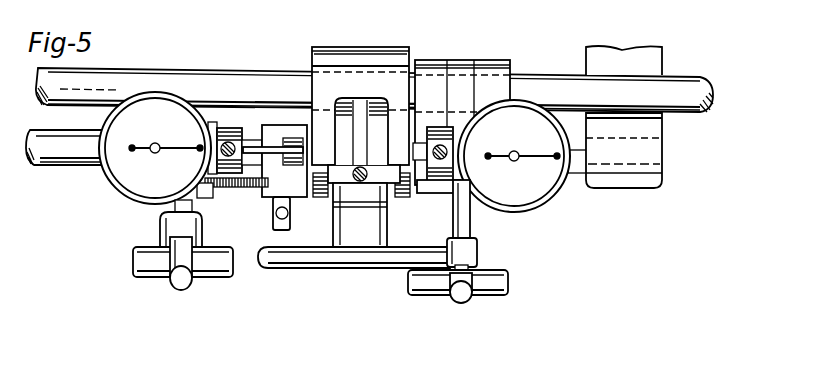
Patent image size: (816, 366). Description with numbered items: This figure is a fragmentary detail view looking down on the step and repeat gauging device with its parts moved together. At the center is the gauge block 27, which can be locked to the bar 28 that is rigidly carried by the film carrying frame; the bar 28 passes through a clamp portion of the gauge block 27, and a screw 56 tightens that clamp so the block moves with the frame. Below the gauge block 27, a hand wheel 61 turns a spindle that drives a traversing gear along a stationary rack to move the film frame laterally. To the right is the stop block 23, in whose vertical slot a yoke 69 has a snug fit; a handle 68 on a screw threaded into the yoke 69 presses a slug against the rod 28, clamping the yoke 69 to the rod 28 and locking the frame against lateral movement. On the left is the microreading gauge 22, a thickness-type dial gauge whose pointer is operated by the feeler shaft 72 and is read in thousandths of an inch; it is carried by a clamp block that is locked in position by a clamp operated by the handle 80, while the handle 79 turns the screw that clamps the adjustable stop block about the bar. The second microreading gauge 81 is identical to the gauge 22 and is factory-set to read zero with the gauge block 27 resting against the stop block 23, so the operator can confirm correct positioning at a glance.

The microreading gauge 22 is at (120, 175).
The stop block 23 is at (495, 84).
The gauge block 27 is at (323, 98).
The bar 28 is at (247, 58).
The screw 56 is at (360, 107).
The hand wheel 61 is at (310, 267).
The handle 68 is at (502, 283).
The yoke 69 is at (462, 67).
The feeler shaft 72 is at (260, 133).
The handle 79 is at (274, 215).
The handle 80 is at (202, 278).
The microreading gauge 81 is at (540, 197).